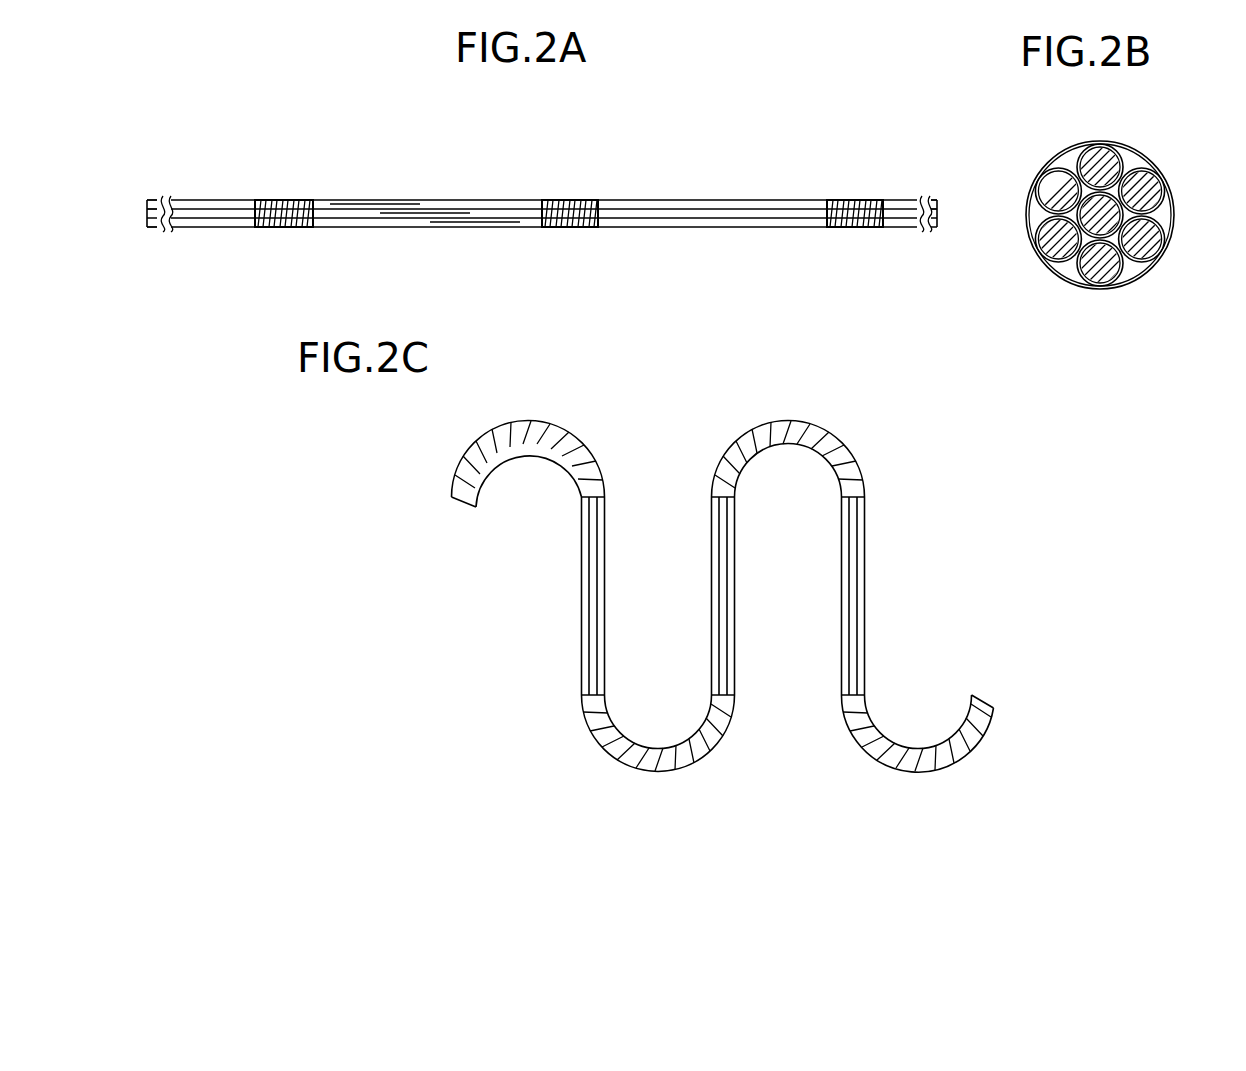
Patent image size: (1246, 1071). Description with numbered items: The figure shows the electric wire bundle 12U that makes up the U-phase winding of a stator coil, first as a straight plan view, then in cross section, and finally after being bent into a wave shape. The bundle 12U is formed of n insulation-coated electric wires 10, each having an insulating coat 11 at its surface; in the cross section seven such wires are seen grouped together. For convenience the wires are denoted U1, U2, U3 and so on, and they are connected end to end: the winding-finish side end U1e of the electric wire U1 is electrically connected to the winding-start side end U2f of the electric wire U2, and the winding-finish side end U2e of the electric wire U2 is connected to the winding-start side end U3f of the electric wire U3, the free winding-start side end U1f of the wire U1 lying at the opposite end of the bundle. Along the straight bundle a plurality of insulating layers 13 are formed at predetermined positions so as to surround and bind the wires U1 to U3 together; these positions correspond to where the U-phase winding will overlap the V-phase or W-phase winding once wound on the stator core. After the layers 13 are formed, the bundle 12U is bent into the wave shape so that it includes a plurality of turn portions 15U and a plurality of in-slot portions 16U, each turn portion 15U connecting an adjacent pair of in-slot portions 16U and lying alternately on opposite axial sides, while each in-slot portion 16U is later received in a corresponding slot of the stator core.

In FIG. 2B, the insulation-coated electric wire 10 is at (1113, 250).
In FIG. 2B, the insulating coat 11 is at (1158, 204).
In FIG. 2A, the electric wire bundle 12U is at (542, 202).
In FIG. 2B, the electric wire bundle 12U is at (1087, 250).
In FIG. 2C, the electric wire bundle 12U is at (723, 603).
In FIG. 2A, the insulating layer 13 is at (283, 230).
In FIG. 2B, the insulating layer 13 is at (1048, 264).
In FIG. 2C, the insulating layer 13 is at (723, 603).
In FIG. 2C, the turn portion 15U is at (832, 446).
In FIG. 2C, the in-slot portion 16U is at (865, 601).
In FIG. 2A, the winding-start side end of electric wire U1 U1f is at (149, 201).
In FIG. 2A, the winding-finish side end of electric wire U2 U2e is at (148, 211).
In FIG. 2A, the winding-start side end of electric wire U3 U3f is at (148, 221).
In FIG. 2A, the electric wire U1 is at (370, 204).
In FIG. 2A, the electric wire U2 is at (418, 213).
In FIG. 2A, the electric wire U3 is at (466, 222).
In FIG. 2A, the winding-finish side end of electric wire U1 U1e is at (935, 202).
In FIG. 2A, the winding-start side end of electric wire U2 U2f is at (938, 211).